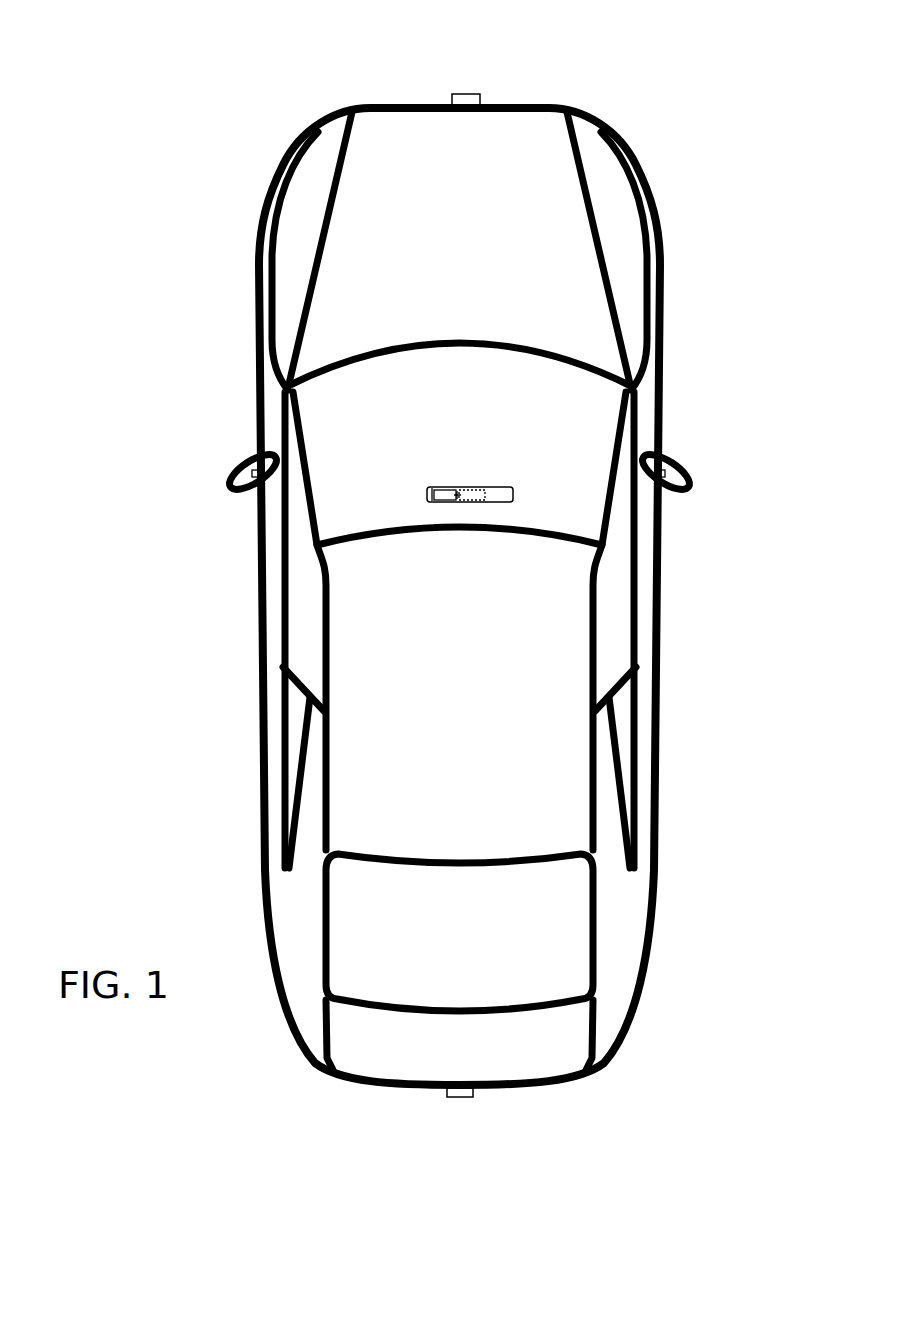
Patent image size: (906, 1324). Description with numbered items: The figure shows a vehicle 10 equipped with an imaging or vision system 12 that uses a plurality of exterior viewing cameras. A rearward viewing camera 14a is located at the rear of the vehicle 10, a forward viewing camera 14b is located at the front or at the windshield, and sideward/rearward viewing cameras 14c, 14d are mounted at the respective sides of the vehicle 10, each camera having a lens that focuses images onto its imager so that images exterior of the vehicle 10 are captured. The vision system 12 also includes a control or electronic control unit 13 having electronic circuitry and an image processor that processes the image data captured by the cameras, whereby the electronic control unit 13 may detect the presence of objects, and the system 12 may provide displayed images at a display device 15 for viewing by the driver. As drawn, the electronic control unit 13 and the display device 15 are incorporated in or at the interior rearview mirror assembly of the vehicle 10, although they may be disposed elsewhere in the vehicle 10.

The vehicle 10 is at (210, 200).
The vision system 12 is at (410, 1120).
The electronic control unit 13 is at (465, 489).
The rearward viewing camera 14a is at (462, 1095).
The forward viewing camera 14b is at (470, 94).
The sideward/rearward viewing camera 14c is at (253, 472).
The sideward/rearward viewing camera 14d is at (663, 473).
The display device 15 is at (443, 492).